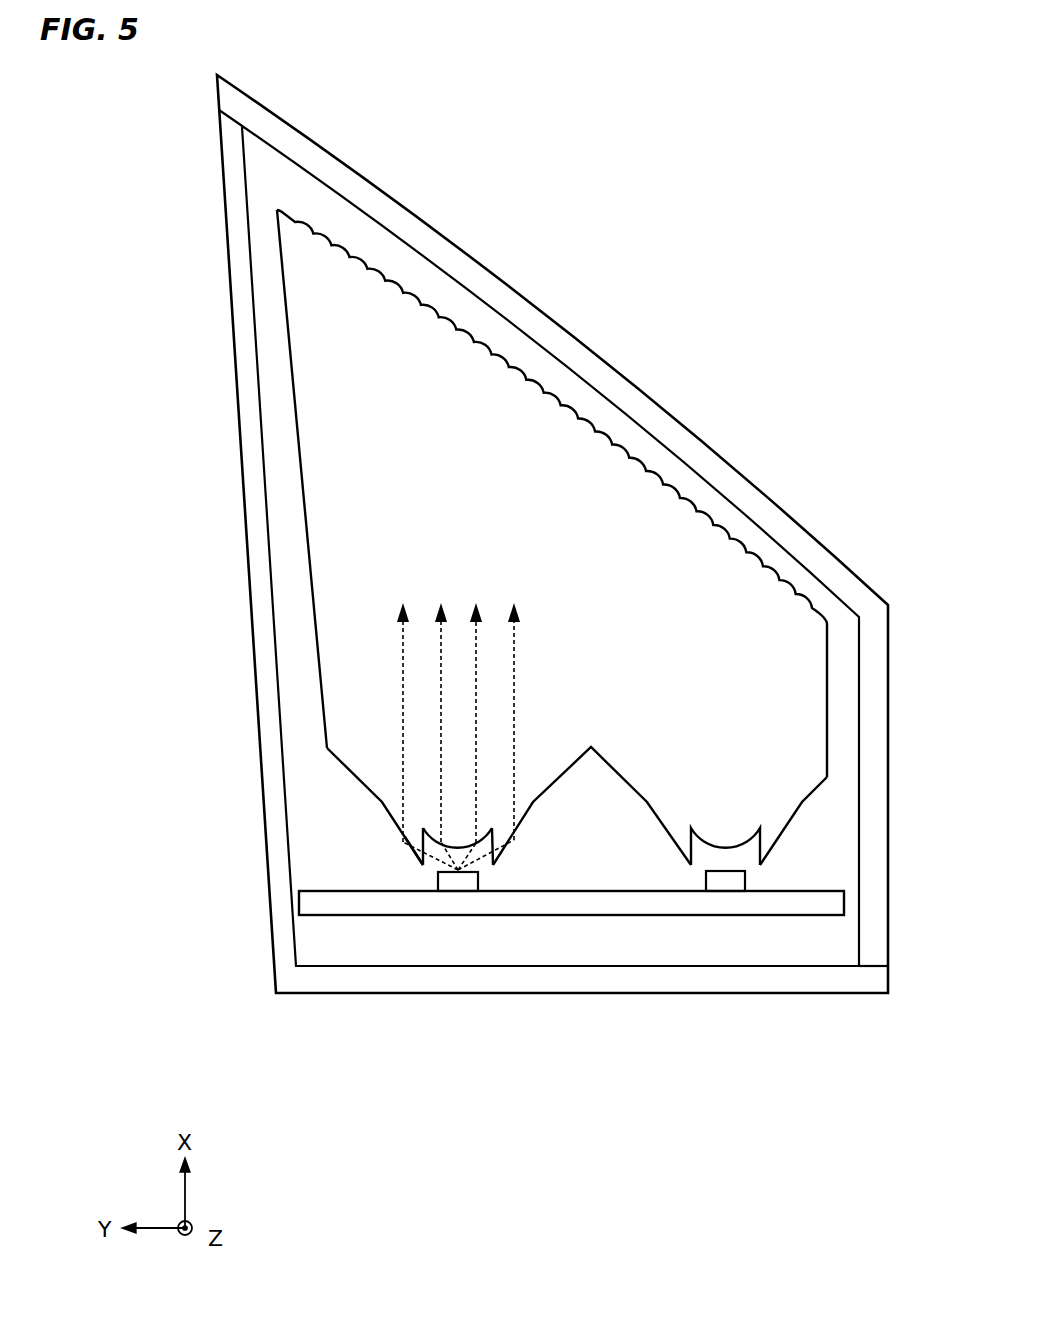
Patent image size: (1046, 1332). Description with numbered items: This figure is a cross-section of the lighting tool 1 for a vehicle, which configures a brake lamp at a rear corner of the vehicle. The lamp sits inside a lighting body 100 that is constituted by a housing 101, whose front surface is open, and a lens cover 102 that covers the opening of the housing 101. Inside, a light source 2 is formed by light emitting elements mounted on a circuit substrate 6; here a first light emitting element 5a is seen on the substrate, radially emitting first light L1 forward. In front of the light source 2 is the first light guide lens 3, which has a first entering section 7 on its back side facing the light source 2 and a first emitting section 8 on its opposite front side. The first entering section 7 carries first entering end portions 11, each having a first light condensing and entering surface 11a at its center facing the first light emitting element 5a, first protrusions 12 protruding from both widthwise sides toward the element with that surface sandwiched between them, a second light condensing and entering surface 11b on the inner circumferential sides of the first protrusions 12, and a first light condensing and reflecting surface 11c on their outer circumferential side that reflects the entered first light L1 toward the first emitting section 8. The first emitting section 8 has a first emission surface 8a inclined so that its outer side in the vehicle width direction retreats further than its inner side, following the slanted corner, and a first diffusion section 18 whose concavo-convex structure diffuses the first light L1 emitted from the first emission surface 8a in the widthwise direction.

The lighting tool for a vehicle 1 is at (483, 96).
The lighting body 100 is at (106, 90).
The housing 101 is at (249, 245).
The lens cover 102 is at (218, 88).
The first light guide lens 3 is at (787, 630).
The first diffusion section 18 is at (543, 392).
The first emitting section 8 is at (552, 417).
The first emission surface 8a is at (552, 417).
The first protrusion 12 is at (393, 827).
The first entering end portion 11 is at (480, 1100).
The first entering section 7 is at (567, 1005).
The first light condensing and entering surface 11a is at (463, 870).
The second light condensing and entering surface 11b is at (434, 857).
The first light condensing and reflecting surface 11c is at (415, 857).
The circuit substrate 6 is at (570, 916).
The first light emitting element 5a is at (730, 890).
The light source 2 is at (591, 989).
The first light L1 is at (403, 697).